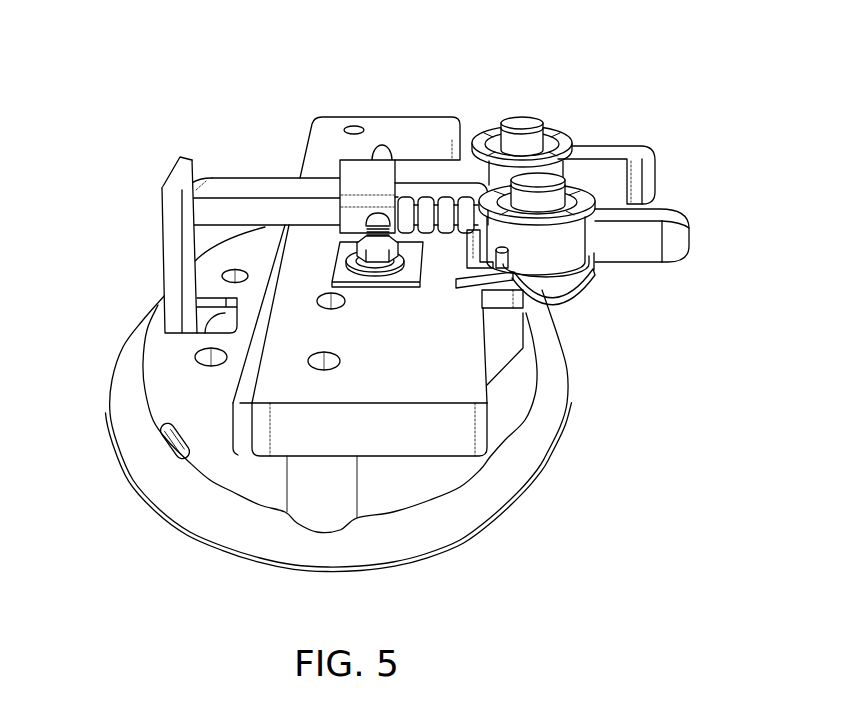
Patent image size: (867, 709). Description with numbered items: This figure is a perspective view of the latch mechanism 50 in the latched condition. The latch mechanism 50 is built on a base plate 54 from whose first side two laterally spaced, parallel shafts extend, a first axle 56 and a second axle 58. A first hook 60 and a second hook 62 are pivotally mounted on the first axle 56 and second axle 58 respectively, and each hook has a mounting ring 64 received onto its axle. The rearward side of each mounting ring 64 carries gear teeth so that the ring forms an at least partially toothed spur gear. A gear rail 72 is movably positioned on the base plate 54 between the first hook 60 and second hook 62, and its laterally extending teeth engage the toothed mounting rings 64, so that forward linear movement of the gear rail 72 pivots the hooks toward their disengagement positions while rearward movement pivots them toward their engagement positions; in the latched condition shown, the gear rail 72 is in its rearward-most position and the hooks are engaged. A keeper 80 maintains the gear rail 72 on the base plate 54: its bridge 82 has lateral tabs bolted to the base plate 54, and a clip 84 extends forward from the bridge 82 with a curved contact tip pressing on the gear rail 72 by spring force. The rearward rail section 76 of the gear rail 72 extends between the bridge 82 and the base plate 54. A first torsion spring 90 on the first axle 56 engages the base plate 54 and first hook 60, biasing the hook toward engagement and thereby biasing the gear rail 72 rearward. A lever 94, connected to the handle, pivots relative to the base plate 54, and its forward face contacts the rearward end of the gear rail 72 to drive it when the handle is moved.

The latch mechanism 50 is at (208, 97).
The base plate 54 is at (457, 430).
The first axle 56 is at (545, 180).
The second axle 58 is at (522, 123).
The first hook 60 is at (678, 233).
The second hook 62 is at (648, 180).
The mounting ring 64 is at (592, 252).
The gear rail 72 is at (273, 190).
The rearward rail section 76 is at (225, 197).
The keeper 80 is at (333, 147).
The bridge 82 is at (365, 172).
The clip 84 is at (427, 172).
The first torsion spring 90 is at (547, 300).
The lever 94 is at (173, 240).